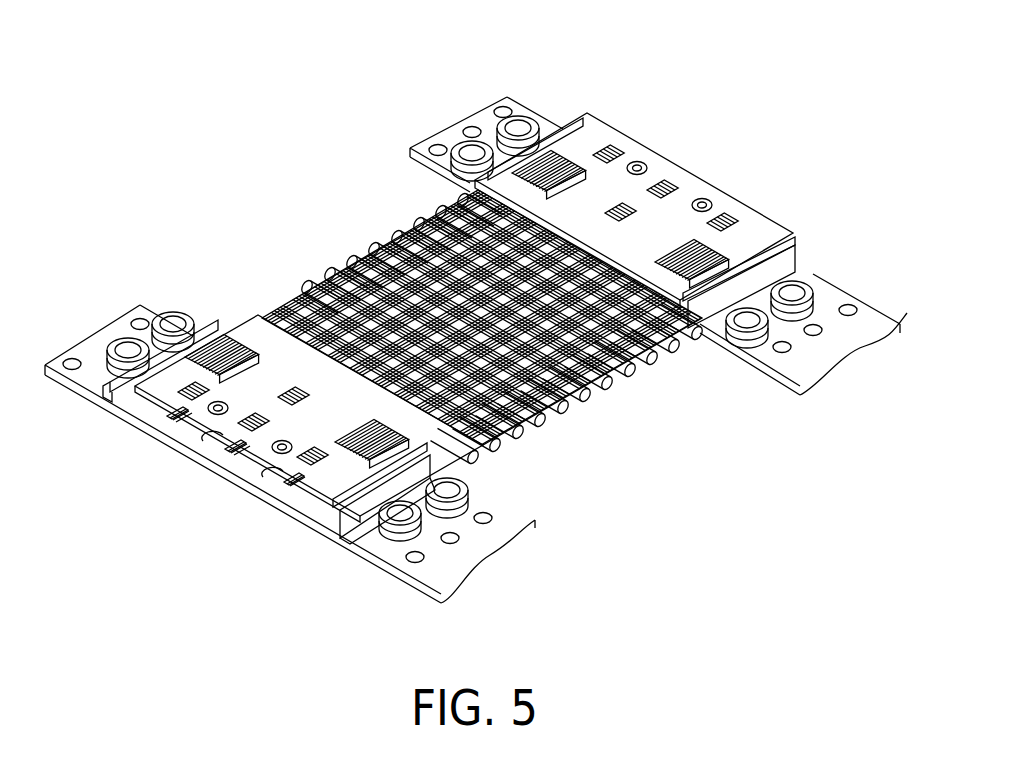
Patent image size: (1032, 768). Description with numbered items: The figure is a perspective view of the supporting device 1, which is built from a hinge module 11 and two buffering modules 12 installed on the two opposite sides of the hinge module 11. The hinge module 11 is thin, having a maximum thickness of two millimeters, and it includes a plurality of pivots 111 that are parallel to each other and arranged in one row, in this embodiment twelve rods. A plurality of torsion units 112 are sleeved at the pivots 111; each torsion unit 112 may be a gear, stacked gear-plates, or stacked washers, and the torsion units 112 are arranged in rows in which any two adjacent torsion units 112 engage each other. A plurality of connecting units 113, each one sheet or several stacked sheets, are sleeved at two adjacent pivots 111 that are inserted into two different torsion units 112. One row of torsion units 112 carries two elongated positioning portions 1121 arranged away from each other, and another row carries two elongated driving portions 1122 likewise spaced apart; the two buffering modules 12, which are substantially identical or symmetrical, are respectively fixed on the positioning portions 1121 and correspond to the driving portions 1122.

The supporting device 1 is at (476, 322).
The hinge module 11 is at (481, 323).
The buffering module 12 is at (476, 317).
The pivot 111 is at (686, 361).
The torsion unit 112 is at (579, 410).
The connecting unit 113 is at (530, 446).
The positioning portion 1121 is at (733, 179).
The driving portion 1122 is at (669, 185).